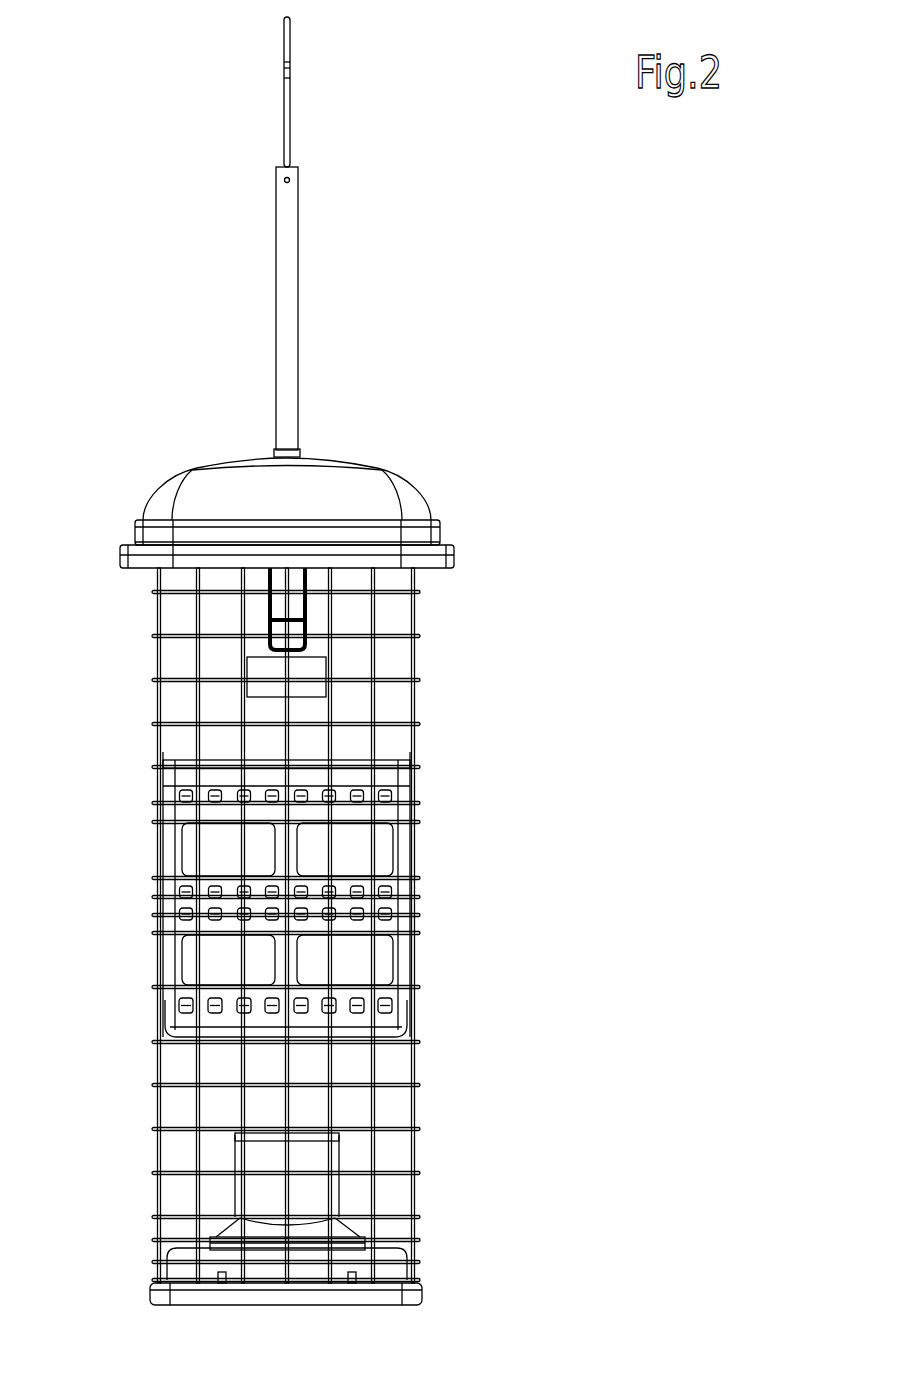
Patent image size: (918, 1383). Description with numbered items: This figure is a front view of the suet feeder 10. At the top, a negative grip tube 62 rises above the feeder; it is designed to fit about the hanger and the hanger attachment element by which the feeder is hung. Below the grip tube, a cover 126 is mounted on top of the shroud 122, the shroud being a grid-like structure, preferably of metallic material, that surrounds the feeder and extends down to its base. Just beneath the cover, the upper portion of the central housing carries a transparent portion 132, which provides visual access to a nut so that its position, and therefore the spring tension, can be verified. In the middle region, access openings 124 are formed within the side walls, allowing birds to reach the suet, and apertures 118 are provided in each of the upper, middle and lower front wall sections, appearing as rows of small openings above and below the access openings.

The suet feeder 10 is at (592, 215).
The negative grip tube 62 is at (292, 288).
The cover 126 is at (390, 478).
The transparent portion 132 is at (295, 604).
The shroud 122 is at (415, 1147).
The access openings 124 is at (347, 850).
The apertures 118 is at (198, 797).